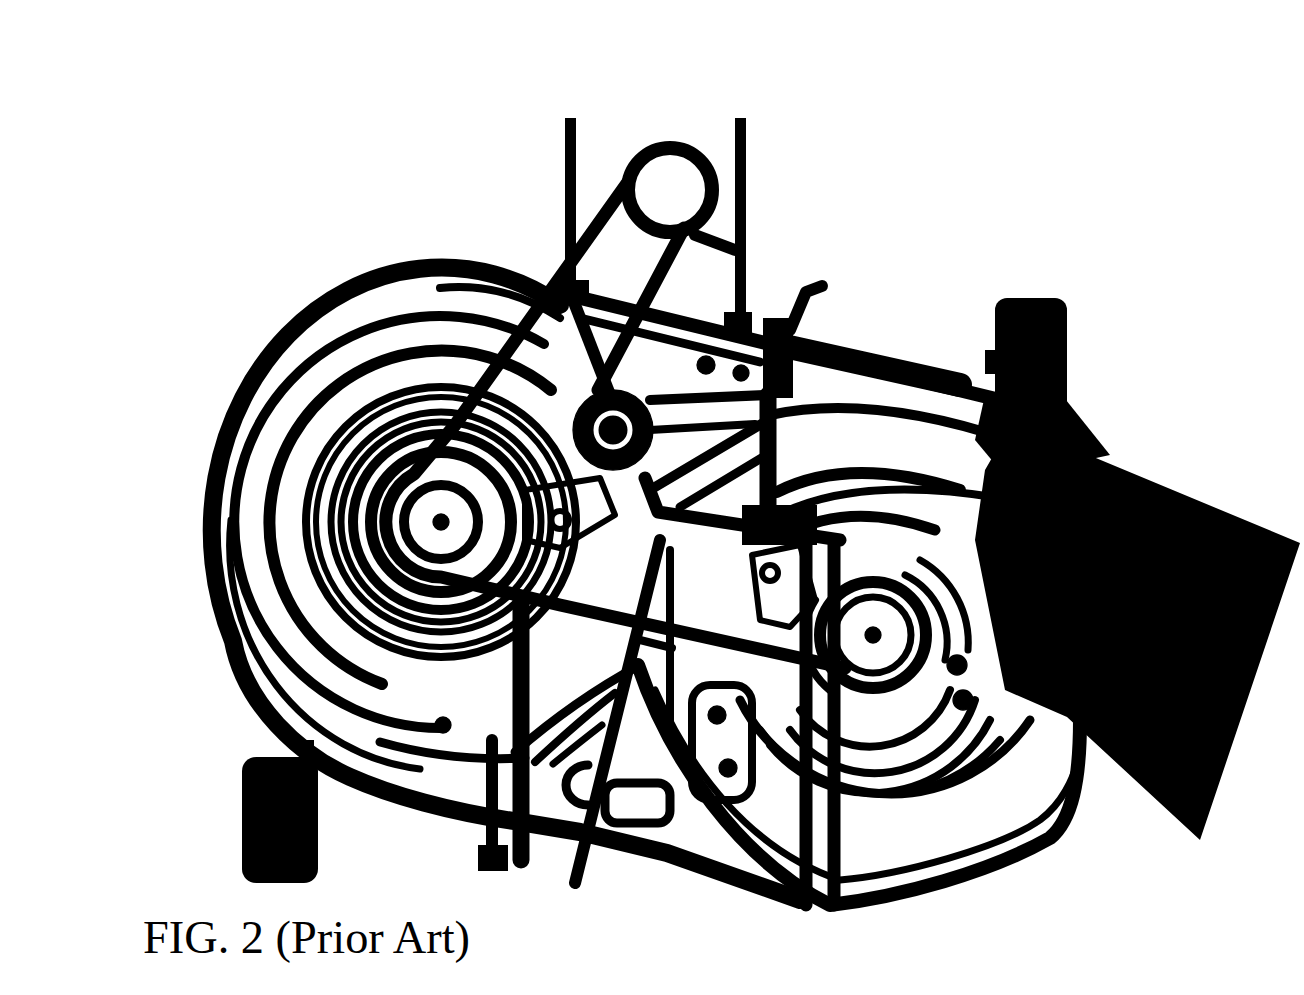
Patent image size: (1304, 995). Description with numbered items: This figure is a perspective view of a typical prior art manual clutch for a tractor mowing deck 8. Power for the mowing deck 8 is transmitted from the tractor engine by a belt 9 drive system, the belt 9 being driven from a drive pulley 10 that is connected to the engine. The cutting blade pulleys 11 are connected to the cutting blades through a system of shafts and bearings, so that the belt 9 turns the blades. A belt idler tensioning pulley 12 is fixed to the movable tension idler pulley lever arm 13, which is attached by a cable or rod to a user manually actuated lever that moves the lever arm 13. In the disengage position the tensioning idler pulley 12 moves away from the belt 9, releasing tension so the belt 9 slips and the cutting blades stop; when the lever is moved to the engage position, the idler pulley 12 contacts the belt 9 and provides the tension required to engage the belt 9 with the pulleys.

The tractor mowing deck 8 is at (262, 345).
The belt 9 is at (437, 258).
The drive pulley 10 is at (660, 205).
The cutting blade pulleys 11 is at (400, 518).
The belt idler tensioning pulley 12 is at (690, 365).
The tension idler pulley lever arm 13 is at (440, 565).